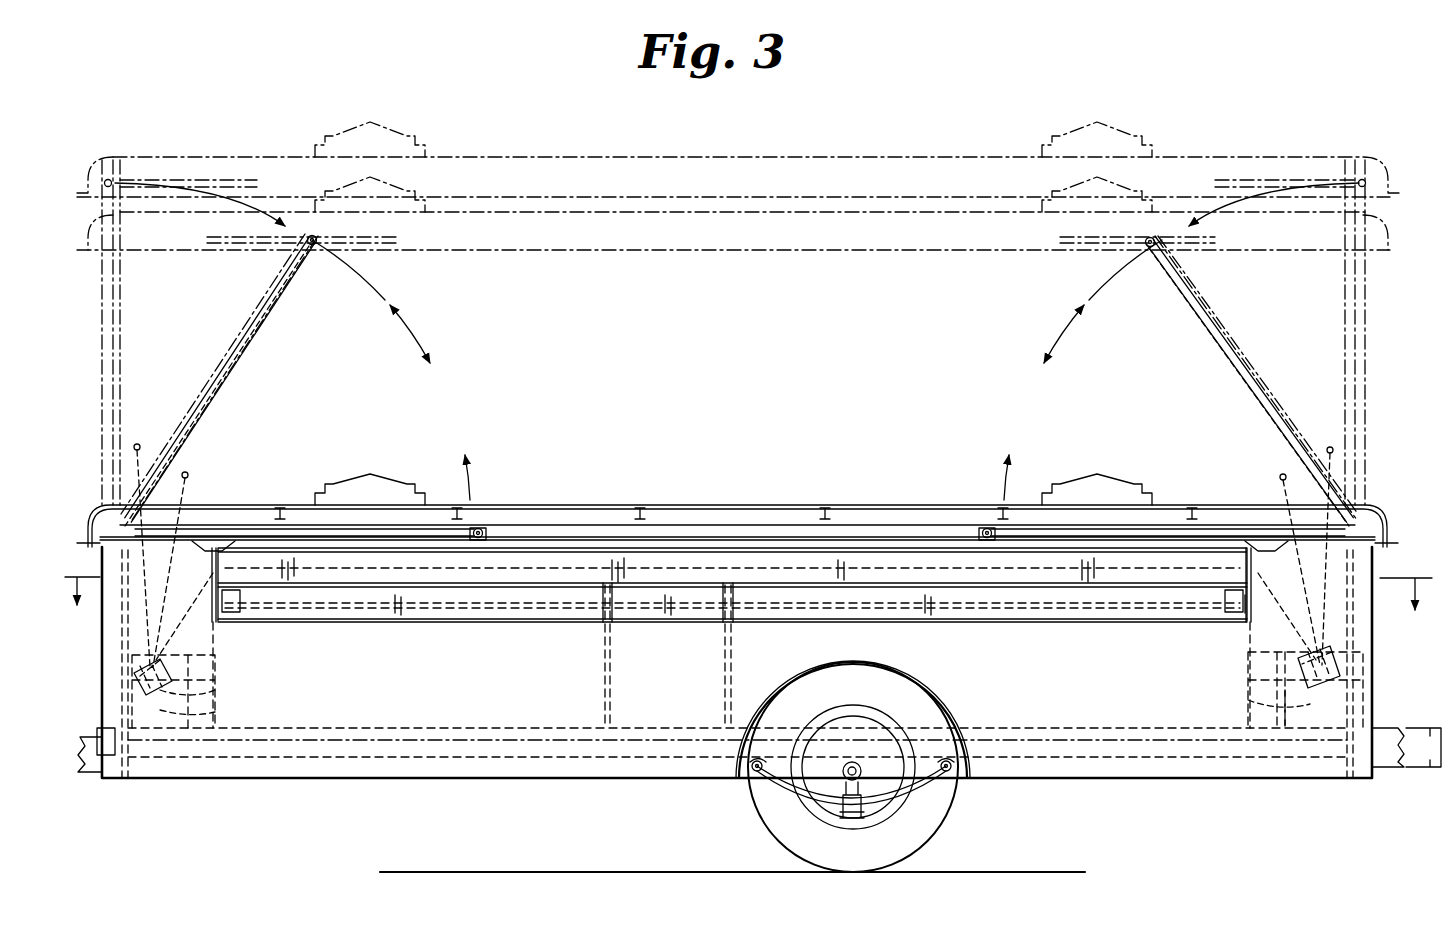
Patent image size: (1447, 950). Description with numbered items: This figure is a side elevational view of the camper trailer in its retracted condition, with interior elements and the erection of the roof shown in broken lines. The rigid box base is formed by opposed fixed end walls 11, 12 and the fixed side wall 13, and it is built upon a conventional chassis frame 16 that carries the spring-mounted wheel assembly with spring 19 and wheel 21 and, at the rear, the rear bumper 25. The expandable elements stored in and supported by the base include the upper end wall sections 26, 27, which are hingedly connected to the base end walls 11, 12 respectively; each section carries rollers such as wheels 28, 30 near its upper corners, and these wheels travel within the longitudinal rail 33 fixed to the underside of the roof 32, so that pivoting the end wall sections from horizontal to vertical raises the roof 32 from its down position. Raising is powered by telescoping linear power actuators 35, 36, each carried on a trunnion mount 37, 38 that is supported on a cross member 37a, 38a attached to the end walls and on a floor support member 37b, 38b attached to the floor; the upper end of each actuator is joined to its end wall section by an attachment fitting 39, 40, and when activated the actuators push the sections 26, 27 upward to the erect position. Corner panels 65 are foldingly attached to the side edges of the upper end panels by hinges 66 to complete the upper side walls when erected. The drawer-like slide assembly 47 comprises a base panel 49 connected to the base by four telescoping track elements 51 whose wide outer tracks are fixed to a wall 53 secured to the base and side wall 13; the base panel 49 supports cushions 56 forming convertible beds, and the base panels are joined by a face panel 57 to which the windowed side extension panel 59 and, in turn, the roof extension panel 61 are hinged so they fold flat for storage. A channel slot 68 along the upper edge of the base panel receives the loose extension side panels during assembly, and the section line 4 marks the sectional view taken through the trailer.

The section line 4- 4 is at (748, 612).
The fixed end wall 11 is at (100, 682).
The fixed end wall 12 is at (1378, 666).
The fixed side wall 13 is at (345, 712).
The chassis frame 16 is at (1057, 760).
The spring 19 is at (778, 795).
The wheel 21 is at (935, 826).
The rear bumper 25 is at (1432, 770).
The upper end wall section 26 is at (236, 332).
The upper end wall section 27 is at (1233, 342).
The wheel 28 is at (318, 241).
The wheel 30 is at (1145, 241).
The roof 32 is at (112, 157).
The longitudinal rail 33 is at (372, 246).
The linear power actuator 35 is at (188, 662).
The linear power actuator 36 is at (1300, 655).
The trunnion mount 37 is at (158, 694).
The cross member 37a is at (218, 690).
The floor support member 37b is at (216, 712).
The trunnion mount 38 is at (1360, 650).
The cross member 38a is at (1285, 730).
The floor support member 38b is at (1248, 708).
The attachment fitting 39 is at (134, 448).
The attachment fitting 40 is at (1328, 447).
The slide assembly 47 is at (450, 622).
The base panel 49 is at (362, 600).
The sliding telescoping rail or track element 51 is at (602, 612).
The wall 53 is at (216, 614).
The cushion 56 is at (485, 608).
The face panel 57 is at (752, 568).
The side extension panel 59 is at (790, 552).
The roof extension panel 61 is at (906, 568).
The corner panel 65 is at (122, 345).
The hinge 66 is at (120, 312).
The channel slot 68 is at (242, 600).